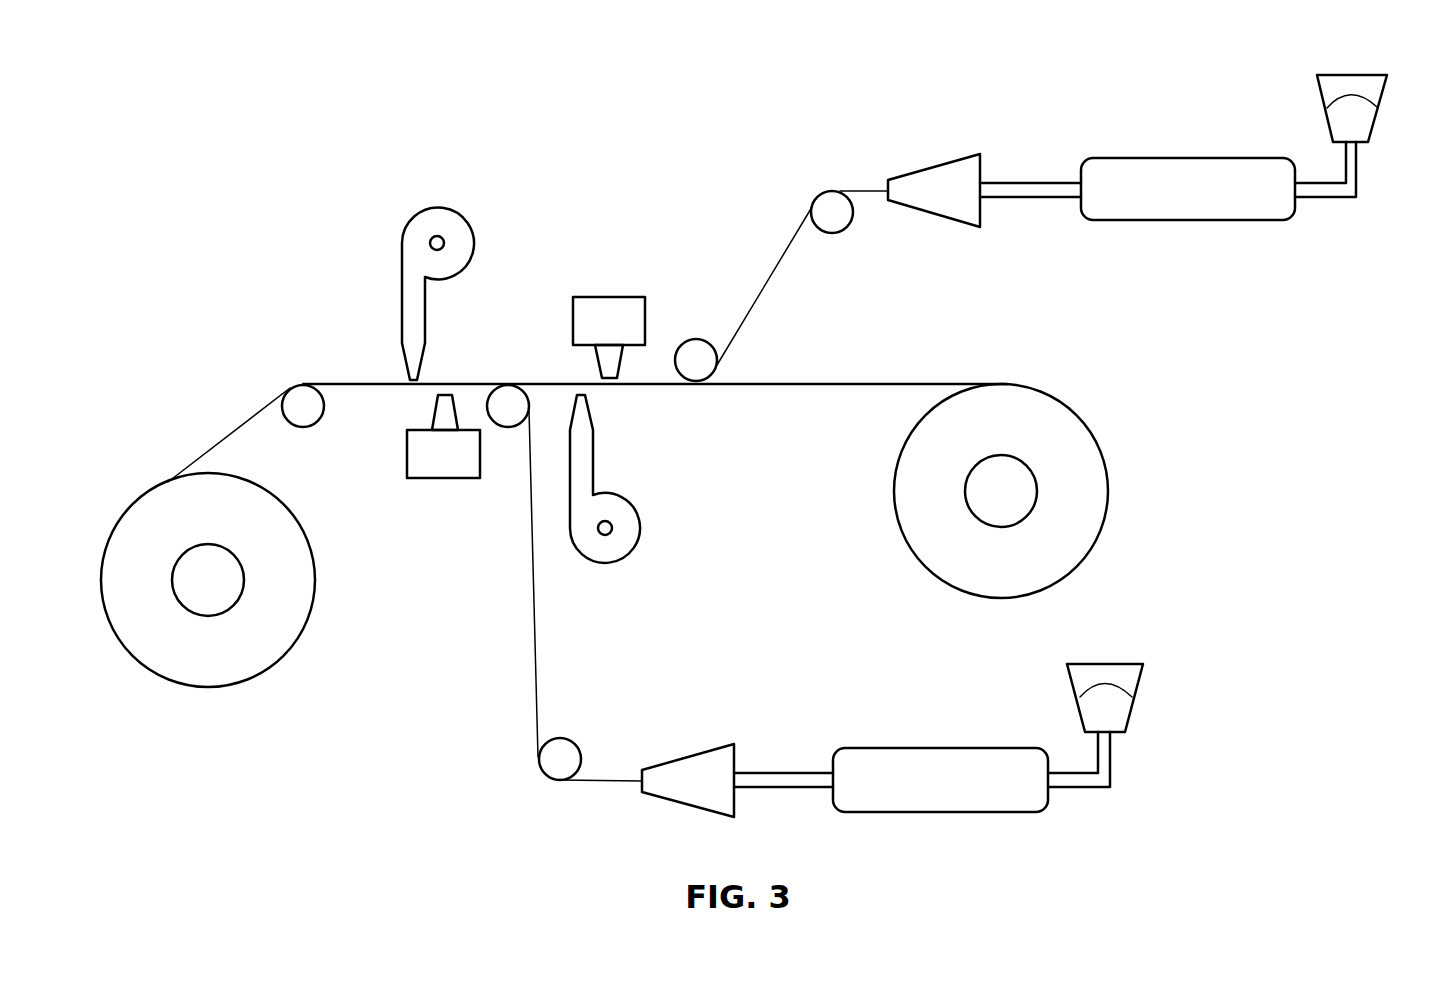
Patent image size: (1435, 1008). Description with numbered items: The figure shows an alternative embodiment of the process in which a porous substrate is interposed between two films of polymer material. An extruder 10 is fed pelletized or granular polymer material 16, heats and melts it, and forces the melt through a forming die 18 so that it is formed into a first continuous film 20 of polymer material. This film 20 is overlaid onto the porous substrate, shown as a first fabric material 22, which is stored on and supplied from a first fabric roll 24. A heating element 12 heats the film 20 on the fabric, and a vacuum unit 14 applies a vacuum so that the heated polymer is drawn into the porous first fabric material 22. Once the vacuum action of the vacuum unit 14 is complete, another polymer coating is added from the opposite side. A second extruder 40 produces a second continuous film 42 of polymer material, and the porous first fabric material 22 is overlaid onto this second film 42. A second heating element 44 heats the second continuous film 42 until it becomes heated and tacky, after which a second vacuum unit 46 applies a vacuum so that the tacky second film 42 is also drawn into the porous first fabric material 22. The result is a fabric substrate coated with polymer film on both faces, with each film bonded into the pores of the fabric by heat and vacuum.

The extruder 10 is at (1160, 157).
The heating element 12 is at (600, 295).
The vacuum unit 14 is at (627, 558).
The pelletized/granular polymer material 16 is at (1353, 117).
The forming die 18 is at (963, 156).
The continuous film of polymer material 20 is at (855, 190).
The first fabric material 22 is at (802, 383).
The first fabric roll 24 is at (1107, 466).
The second extruder 40 is at (912, 747).
The second continuous film of polymer material 42 is at (617, 778).
The second heating element 44 is at (443, 480).
The second vacuum unit 46 is at (412, 218).